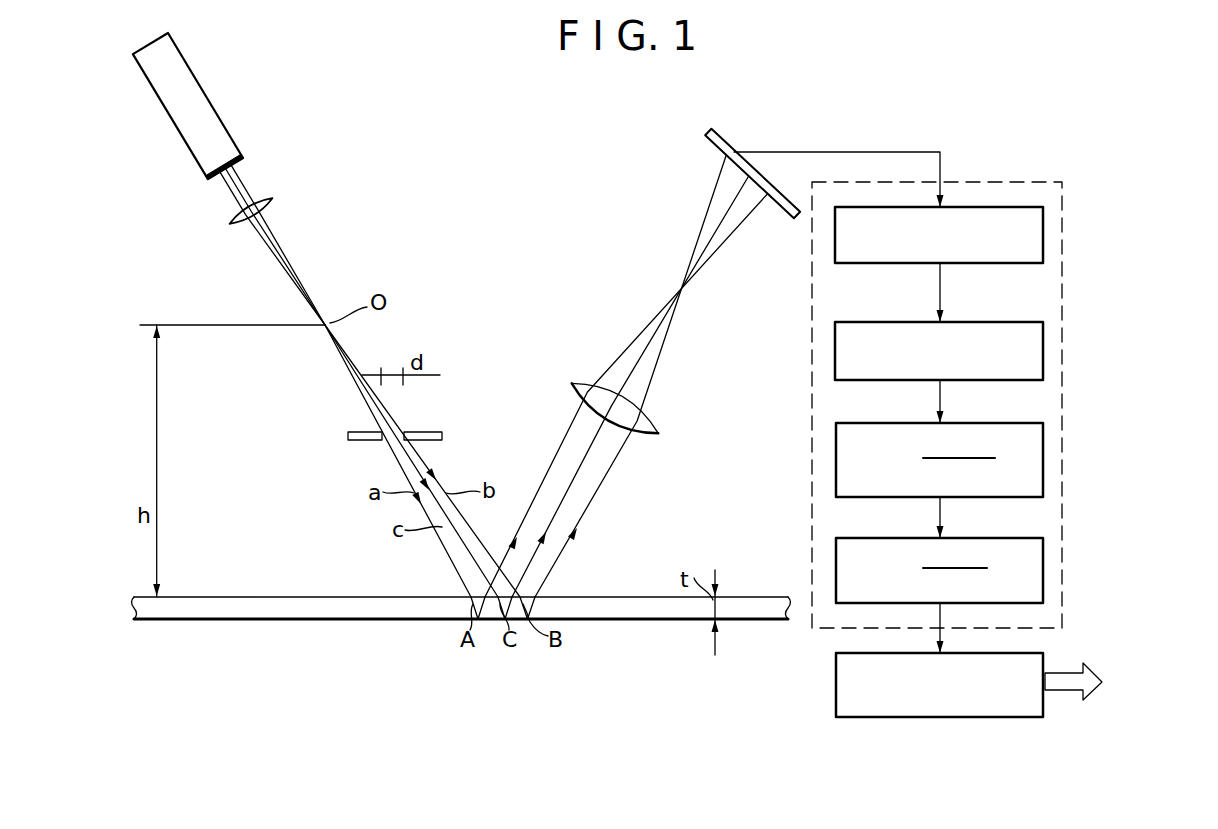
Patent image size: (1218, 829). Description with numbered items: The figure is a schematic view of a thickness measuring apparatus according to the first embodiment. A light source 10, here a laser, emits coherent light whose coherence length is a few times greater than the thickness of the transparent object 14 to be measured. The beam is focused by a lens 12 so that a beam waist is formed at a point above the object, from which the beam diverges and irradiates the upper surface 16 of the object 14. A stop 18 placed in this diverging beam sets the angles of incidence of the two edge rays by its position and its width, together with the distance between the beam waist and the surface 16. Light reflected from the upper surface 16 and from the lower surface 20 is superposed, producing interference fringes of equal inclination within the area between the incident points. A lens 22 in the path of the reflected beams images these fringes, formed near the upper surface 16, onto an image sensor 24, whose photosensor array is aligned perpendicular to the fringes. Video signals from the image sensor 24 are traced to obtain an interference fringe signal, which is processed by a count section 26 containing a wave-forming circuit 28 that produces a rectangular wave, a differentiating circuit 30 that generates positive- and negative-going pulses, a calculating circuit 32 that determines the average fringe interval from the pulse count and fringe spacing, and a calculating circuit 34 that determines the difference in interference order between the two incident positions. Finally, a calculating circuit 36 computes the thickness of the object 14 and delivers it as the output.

The light source 10 is at (232, 120).
The lens 12 is at (268, 198).
The object 14 is at (461, 610).
The upper surface 16 is at (760, 596).
The stop 18 is at (352, 441).
The lower surface 20 is at (757, 621).
The lens 22 is at (660, 412).
The image sensor 24 is at (736, 150).
The count section 26 is at (1062, 290).
The wave-forming circuit 28 is at (1045, 245).
The differentiating circuit 30 is at (1045, 360).
The calculating circuit 32 is at (1045, 450).
The calculating circuit 34 is at (1045, 570).
The calculating circuit 36 is at (1045, 660).